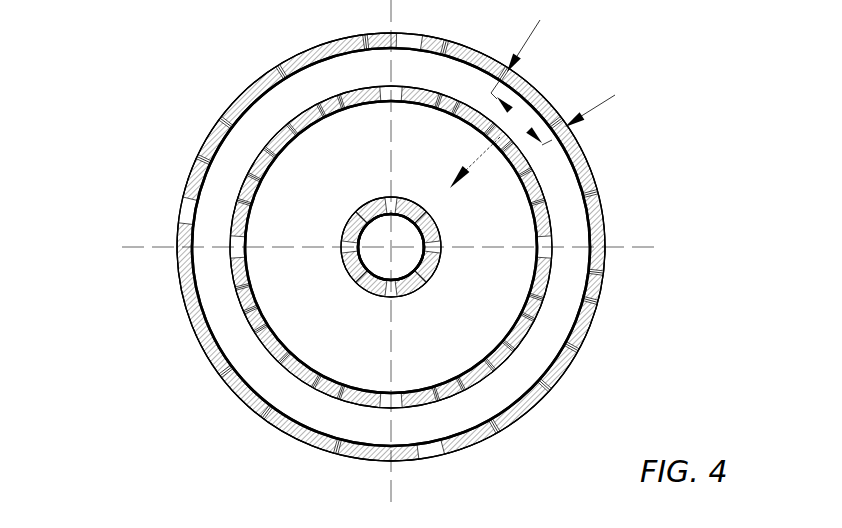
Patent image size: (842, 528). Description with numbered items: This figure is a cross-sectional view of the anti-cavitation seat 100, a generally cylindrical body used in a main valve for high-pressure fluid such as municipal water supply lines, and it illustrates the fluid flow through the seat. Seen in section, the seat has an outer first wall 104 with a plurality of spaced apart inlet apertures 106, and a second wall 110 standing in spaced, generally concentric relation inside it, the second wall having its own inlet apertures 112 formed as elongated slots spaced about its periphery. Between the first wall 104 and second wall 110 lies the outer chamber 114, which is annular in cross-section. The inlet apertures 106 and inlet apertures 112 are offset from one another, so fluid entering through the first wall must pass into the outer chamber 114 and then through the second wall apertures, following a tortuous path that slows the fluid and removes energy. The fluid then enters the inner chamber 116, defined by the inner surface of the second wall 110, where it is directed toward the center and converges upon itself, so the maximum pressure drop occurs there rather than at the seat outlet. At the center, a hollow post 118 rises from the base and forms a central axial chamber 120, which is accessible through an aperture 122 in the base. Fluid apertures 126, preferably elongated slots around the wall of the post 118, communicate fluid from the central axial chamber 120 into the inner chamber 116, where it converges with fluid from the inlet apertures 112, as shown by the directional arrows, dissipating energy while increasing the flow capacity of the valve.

The anti-cavitation seat 100 is at (166, 54).
The first wall 104 is at (204, 172).
The inlet apertures 106 is at (276, 80).
The second wall 110 is at (263, 334).
The inlet apertures 112 is at (281, 358).
The outer chamber 114 is at (218, 300).
The inner chamber 116 is at (465, 325).
The hollow post 118 is at (443, 250).
The central axial chamber 120 is at (380, 238).
The aperture 122 is at (380, 238).
The fluid apertures 126 is at (420, 278).